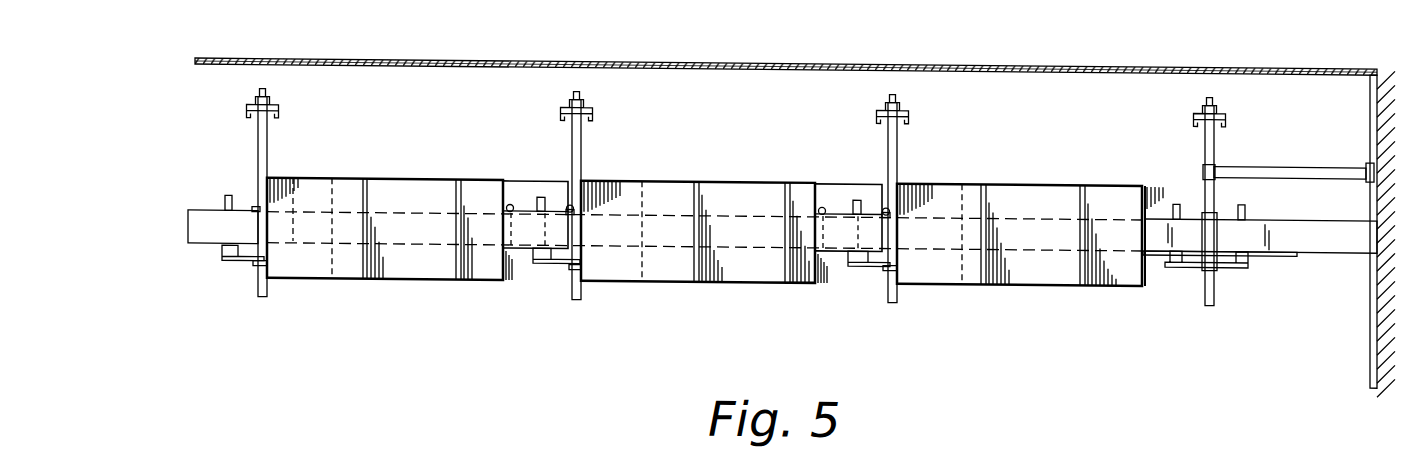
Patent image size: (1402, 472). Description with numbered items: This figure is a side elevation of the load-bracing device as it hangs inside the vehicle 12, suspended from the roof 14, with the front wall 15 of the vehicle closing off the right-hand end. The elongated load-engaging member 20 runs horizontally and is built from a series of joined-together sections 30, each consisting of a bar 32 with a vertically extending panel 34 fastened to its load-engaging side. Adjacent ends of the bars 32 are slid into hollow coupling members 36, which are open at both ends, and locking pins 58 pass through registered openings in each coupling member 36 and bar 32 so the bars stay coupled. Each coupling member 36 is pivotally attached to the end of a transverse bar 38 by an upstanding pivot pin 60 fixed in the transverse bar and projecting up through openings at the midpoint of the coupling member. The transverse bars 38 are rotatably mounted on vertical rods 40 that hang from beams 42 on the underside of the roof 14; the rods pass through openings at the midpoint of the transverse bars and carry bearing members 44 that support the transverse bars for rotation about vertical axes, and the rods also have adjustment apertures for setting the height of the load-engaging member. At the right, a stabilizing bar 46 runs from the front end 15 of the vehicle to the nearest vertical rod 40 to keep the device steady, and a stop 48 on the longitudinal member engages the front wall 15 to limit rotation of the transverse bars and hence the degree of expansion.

The vehicle 12 is at (946, 45).
The roof 14 is at (728, 58).
The front end 15 is at (1370, 316).
The load-engaging member 20 is at (735, 150).
The section 30 is at (352, 290).
The bar 32 is at (409, 210).
The panel 34 is at (390, 270).
The coupling member 36 is at (198, 216).
The transverse bar 38 is at (242, 260).
The vertical rod 40 is at (258, 146).
The beam 42 is at (279, 112).
The bearing member 44 is at (270, 262).
The stabilizing bar 46 is at (1296, 157).
The stop 48 is at (1322, 232).
The locking pin 58 is at (508, 200).
The pivot pin 60 is at (541, 193).